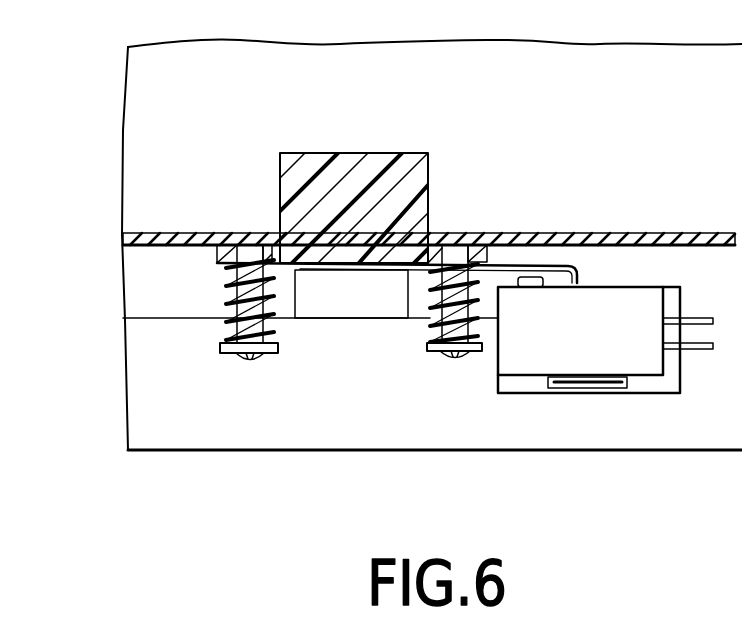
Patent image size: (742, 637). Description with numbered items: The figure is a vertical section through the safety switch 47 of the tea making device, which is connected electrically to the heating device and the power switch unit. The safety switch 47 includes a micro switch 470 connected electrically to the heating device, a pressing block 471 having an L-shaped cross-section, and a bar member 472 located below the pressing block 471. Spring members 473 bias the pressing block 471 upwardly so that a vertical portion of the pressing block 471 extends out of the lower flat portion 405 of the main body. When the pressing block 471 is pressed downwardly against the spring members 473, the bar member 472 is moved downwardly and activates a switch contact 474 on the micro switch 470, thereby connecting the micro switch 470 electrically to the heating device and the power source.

The lower flat portion 405 is at (177, 234).
The pressing block 471 is at (435, 157).
The bar member 472 is at (383, 268).
The spring members 473 is at (228, 278).
The safety switch 47 is at (214, 341).
The micro switch 470 is at (530, 358).
The switch contact 474 is at (533, 283).